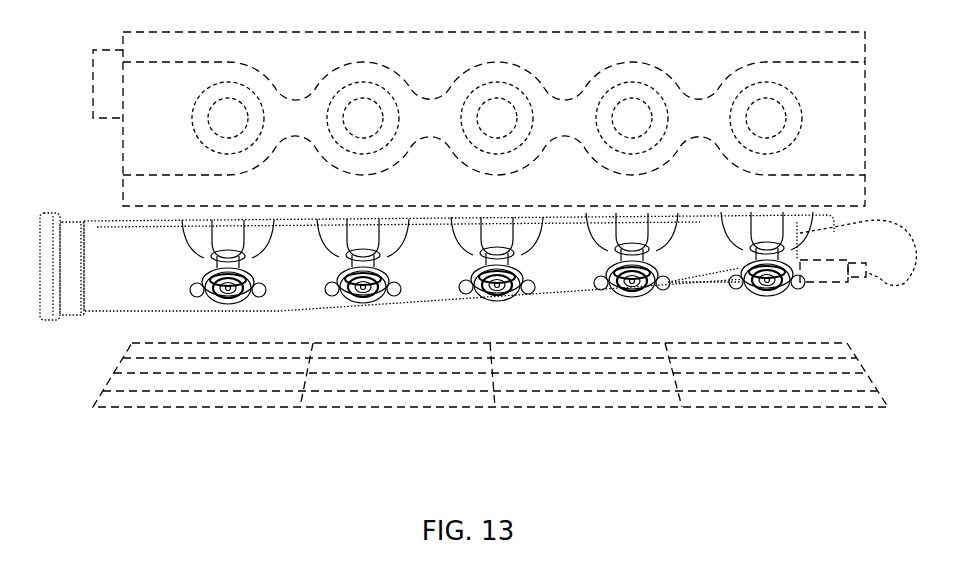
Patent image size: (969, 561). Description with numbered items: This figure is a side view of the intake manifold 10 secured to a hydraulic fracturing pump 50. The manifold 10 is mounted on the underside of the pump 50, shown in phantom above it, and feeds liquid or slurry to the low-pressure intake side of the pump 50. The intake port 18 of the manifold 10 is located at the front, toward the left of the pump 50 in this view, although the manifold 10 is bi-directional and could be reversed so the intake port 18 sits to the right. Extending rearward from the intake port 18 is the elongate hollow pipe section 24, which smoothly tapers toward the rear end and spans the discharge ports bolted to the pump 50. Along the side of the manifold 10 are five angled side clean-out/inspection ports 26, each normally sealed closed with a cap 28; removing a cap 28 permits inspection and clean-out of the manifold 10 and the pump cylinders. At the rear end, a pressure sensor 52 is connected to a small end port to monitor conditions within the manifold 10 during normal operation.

The intake manifold 10 is at (72, 307).
The intake port 18 is at (41, 224).
The elongate hollow pipe section 24 is at (111, 263).
The side clean-out/inspection port 26 is at (365, 228).
The cap 28 is at (200, 300).
The hydraulic fracturing pump 50 is at (817, 183).
The pressure sensor 52 is at (817, 273).